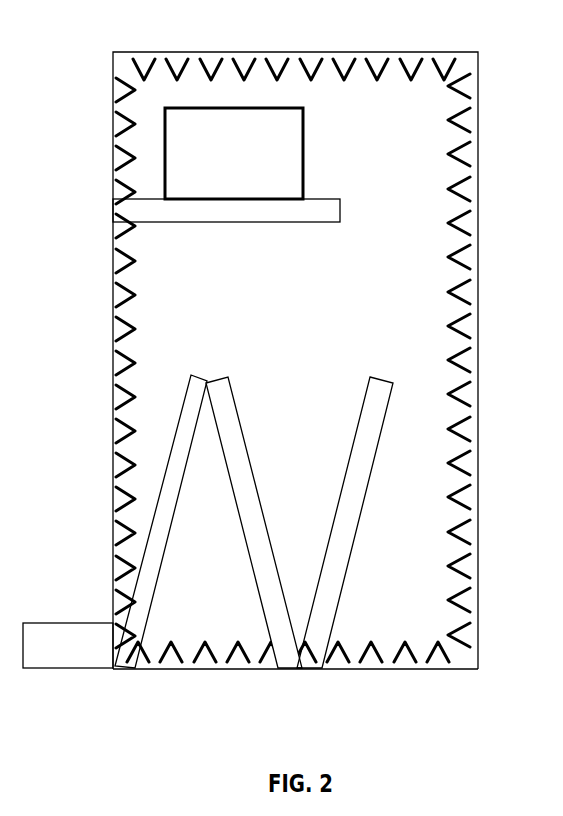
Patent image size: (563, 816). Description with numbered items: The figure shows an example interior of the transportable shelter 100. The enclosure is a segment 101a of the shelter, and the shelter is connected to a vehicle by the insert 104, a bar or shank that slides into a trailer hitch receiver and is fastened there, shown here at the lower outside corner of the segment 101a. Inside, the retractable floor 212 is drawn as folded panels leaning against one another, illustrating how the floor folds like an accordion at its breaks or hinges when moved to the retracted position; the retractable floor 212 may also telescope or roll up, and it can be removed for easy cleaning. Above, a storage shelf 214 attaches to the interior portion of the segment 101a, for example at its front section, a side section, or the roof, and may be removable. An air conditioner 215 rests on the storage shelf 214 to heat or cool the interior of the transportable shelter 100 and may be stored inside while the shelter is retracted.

The segment 101a is at (295, 343).
The transportable shelter 100 is at (328, 684).
The air conditioner 215 is at (322, 157).
The storage shelf 214 is at (229, 238).
The retractable floor 212 is at (379, 491).
The insert 104 is at (68, 645).